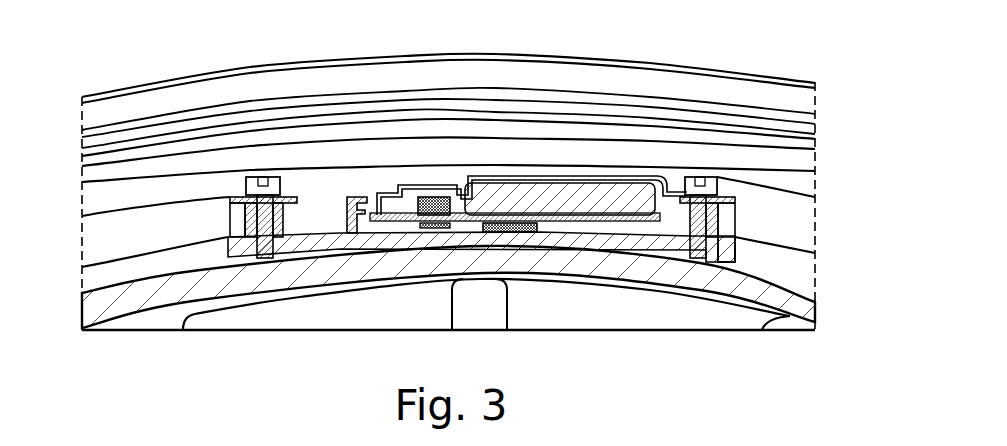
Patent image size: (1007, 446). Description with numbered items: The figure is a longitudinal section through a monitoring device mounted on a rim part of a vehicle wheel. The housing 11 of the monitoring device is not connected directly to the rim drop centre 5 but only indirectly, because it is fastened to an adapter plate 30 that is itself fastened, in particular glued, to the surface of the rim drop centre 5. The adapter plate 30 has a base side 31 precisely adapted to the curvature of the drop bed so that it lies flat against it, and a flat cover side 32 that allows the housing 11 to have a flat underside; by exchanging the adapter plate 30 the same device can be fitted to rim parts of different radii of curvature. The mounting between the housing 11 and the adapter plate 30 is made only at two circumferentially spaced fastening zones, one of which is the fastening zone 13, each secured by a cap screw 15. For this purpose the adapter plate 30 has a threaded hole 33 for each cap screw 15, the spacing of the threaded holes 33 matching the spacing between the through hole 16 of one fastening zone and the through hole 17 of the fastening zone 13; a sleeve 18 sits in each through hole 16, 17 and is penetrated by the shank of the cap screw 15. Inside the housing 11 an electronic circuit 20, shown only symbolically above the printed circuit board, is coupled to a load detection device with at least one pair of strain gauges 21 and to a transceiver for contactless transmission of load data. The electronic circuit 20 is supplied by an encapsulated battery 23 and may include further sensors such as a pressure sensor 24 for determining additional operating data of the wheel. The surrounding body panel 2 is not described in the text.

The vehicle body panel 2 is at (303, 90).
The rim drop centre 5 is at (363, 267).
The housing 11 is at (320, 212).
The fastening zone 13 is at (733, 241).
The cap screw 15 is at (263, 177).
The through hole 16 is at (240, 225).
The through hole 17 is at (712, 225).
The sleeve 18 is at (240, 214).
The electronic circuit 20 is at (510, 232).
The strain gauges 21 is at (358, 197).
The battery 23 is at (588, 195).
The pressure sensor 24 is at (427, 197).
The adapter plate 30 is at (287, 250).
The base side 31 is at (428, 236).
The cover side 32 is at (324, 222).
The threaded hole 33 is at (240, 238).